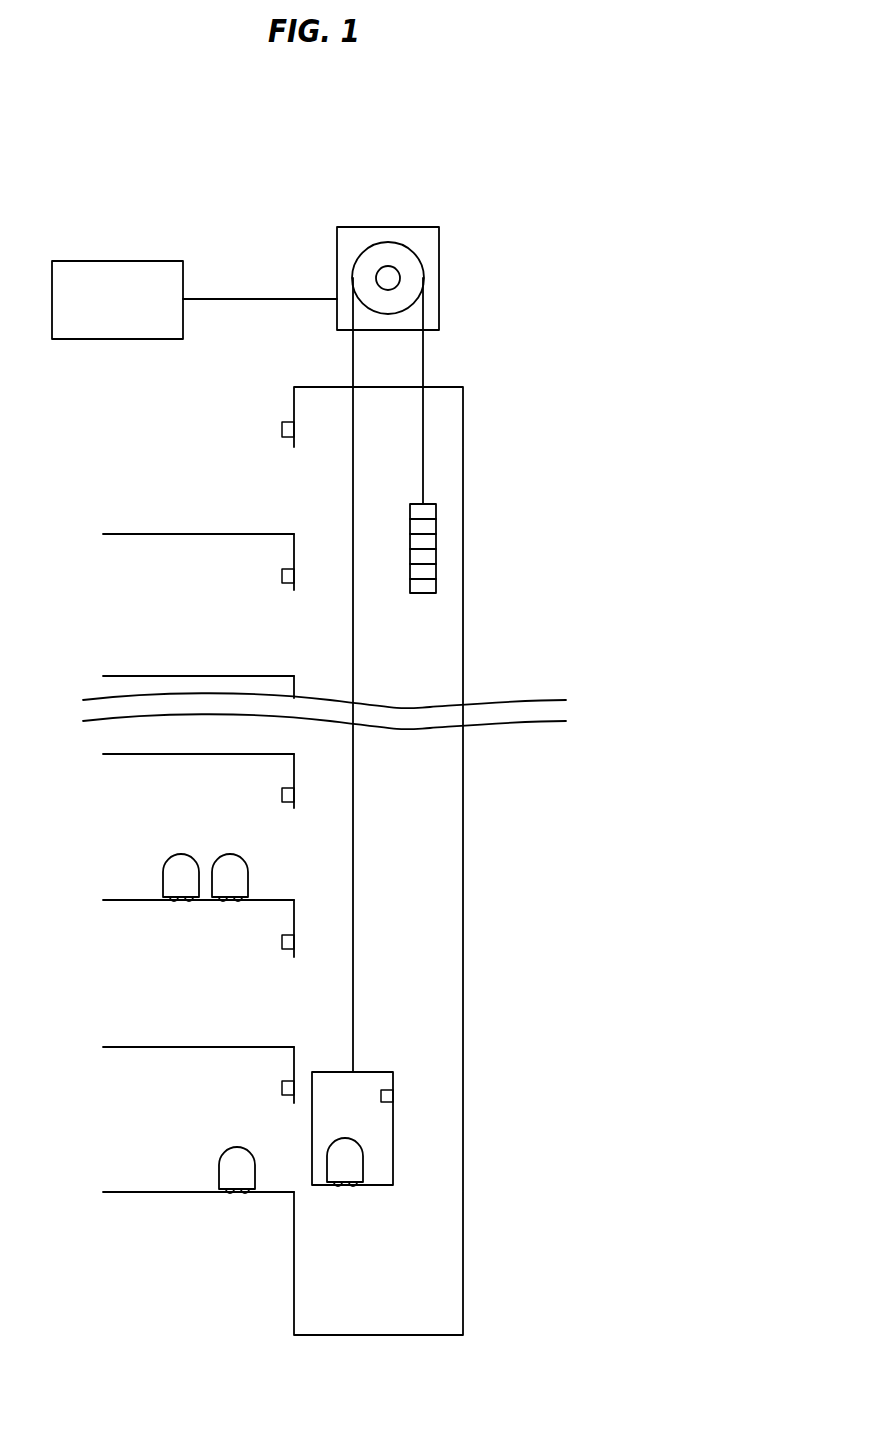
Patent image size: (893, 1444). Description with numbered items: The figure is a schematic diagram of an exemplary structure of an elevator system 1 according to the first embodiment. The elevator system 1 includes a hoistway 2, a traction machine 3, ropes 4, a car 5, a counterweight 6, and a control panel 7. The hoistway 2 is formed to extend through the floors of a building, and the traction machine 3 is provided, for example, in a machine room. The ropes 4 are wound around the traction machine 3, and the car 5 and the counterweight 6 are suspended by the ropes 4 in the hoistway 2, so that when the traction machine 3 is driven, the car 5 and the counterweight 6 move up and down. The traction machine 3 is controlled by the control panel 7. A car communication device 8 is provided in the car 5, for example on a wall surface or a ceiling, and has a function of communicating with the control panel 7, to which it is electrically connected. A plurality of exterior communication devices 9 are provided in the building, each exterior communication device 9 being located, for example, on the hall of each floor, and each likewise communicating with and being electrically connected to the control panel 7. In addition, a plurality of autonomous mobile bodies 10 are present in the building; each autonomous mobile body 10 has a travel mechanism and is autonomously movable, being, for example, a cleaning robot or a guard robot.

The elevator system 1 is at (498, 207).
The hoistway 2 is at (463, 897).
The traction machine 3 is at (337, 272).
The ropes 4 is at (423, 458).
The car 5 is at (393, 1122).
The counterweight 6 is at (436, 555).
The control panel 7 is at (86, 261).
The car communication device 8 is at (387, 1090).
The exterior communication device 9 is at (282, 430).
The autonomous mobile body 10 is at (229, 854).